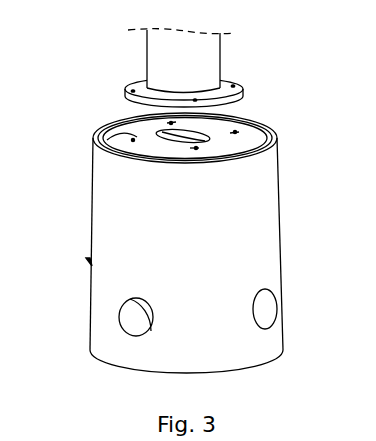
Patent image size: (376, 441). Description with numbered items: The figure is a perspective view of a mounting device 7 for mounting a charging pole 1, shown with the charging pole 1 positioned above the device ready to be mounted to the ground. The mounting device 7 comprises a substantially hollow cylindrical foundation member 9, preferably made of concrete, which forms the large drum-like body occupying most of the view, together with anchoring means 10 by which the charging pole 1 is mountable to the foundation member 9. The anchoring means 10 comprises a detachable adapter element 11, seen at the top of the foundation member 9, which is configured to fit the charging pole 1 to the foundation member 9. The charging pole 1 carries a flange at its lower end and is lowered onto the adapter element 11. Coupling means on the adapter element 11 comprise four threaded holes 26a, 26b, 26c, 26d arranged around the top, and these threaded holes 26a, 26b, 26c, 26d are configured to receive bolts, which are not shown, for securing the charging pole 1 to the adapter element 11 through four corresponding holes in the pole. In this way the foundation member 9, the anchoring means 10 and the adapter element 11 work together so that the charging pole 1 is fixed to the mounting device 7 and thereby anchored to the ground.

The charging pole 1 is at (221, 62).
The mounting device 7 is at (133, 377).
The foundation member 9 is at (88, 262).
The anchoring means 10 is at (148, 137).
The adapter element 11 is at (213, 125).
The threaded hole 26a is at (268, 143).
The threaded hole 26b is at (198, 150).
The threaded hole 26c is at (244, 101).
The threaded hole 26d is at (133, 139).